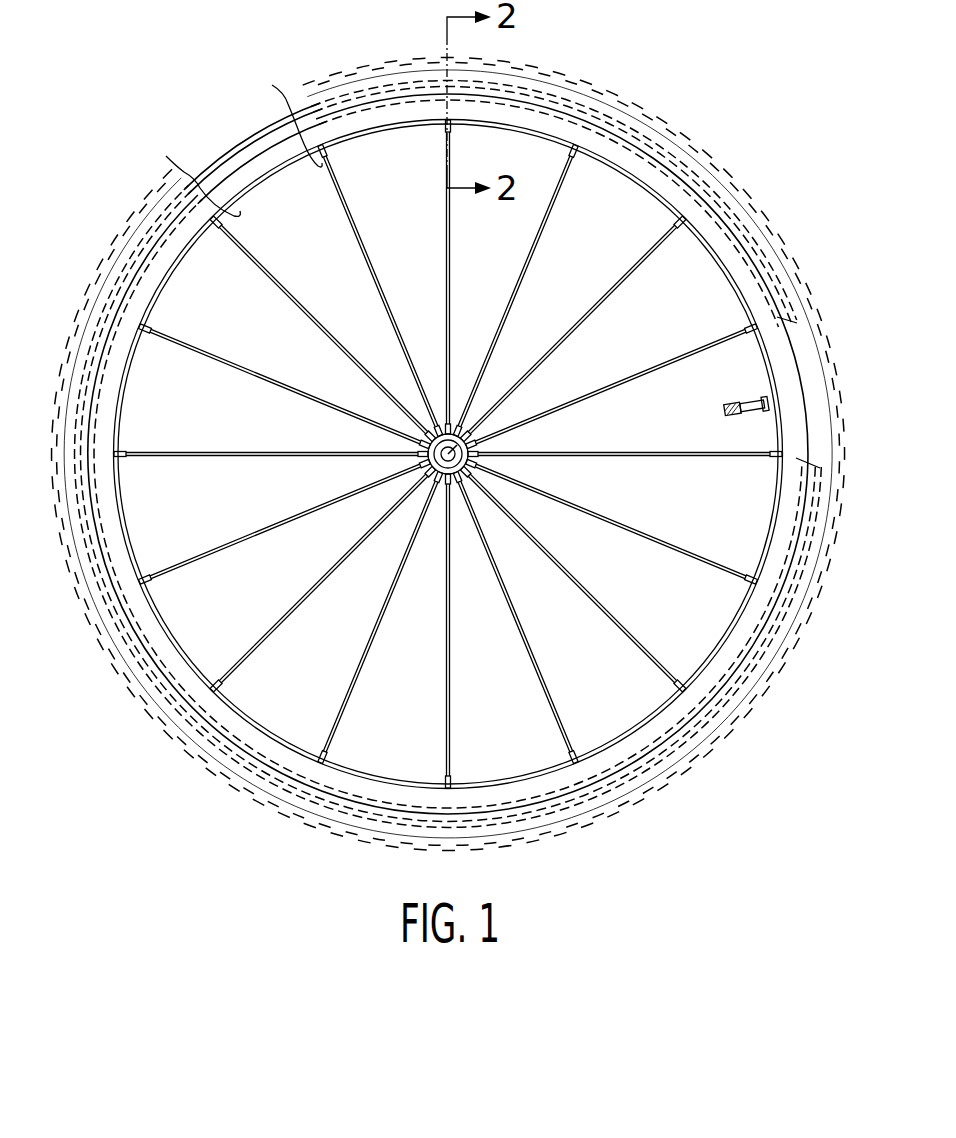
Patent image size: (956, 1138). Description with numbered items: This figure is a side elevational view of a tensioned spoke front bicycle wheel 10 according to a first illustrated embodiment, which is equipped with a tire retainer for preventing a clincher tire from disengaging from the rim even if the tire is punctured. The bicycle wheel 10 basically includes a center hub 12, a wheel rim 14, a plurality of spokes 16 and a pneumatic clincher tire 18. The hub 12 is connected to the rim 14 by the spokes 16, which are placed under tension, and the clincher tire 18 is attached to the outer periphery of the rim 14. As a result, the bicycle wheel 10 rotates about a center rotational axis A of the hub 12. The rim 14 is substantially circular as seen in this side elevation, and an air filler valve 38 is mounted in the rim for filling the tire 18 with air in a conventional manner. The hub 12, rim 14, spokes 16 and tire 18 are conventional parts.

The bicycle wheel 10 is at (448, 427).
The center hub 12 is at (388, 466).
The wheel rim 14 is at (724, 287).
The spokes 16 is at (556, 732).
The pneumatic clincher tire 18 is at (687, 139).
The air filler valve 38 is at (753, 410).
The center rotational axis A is at (452, 449).